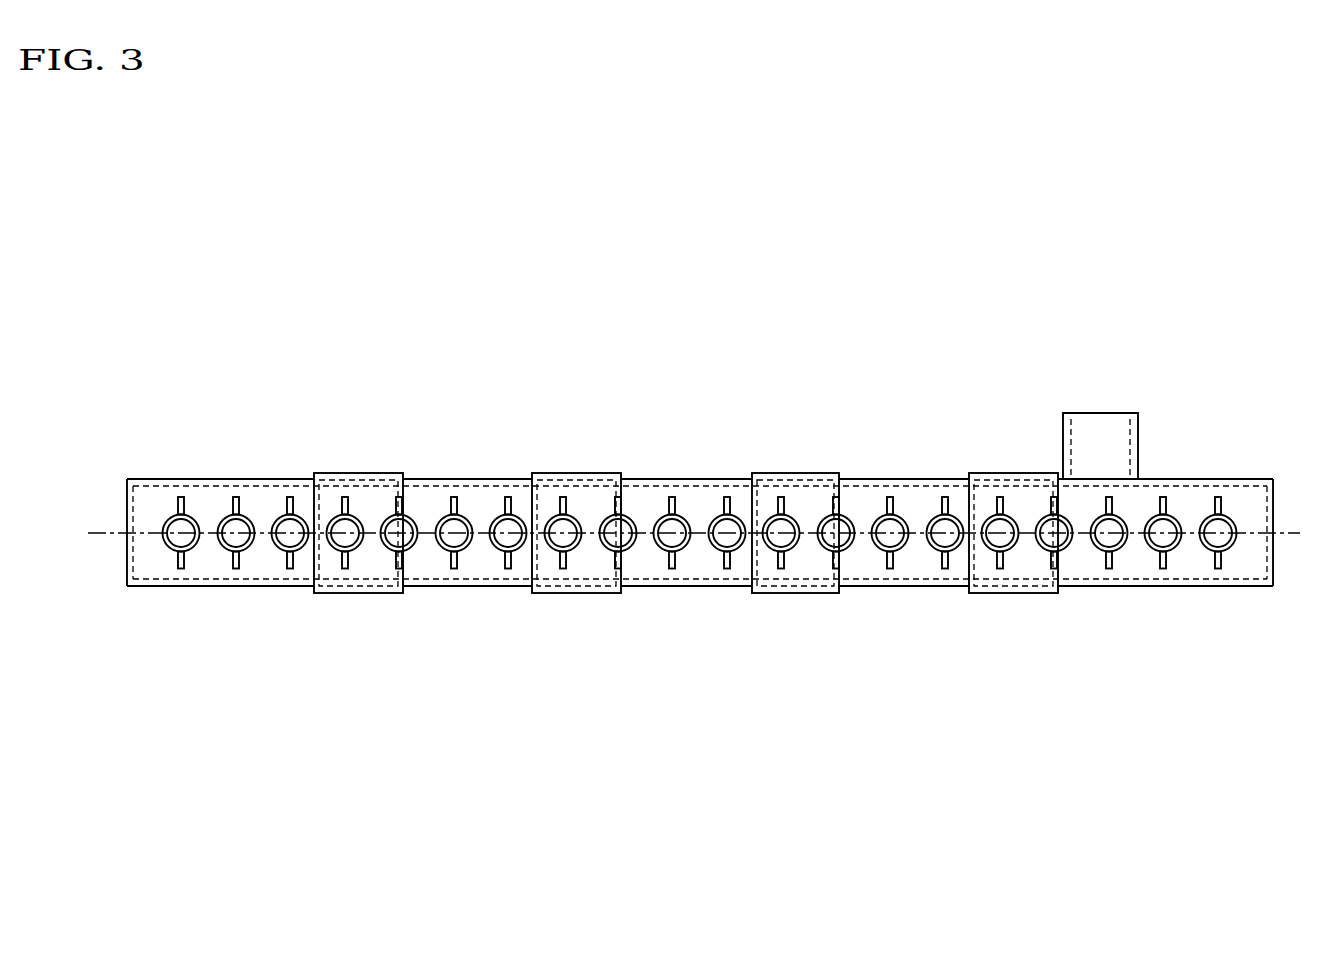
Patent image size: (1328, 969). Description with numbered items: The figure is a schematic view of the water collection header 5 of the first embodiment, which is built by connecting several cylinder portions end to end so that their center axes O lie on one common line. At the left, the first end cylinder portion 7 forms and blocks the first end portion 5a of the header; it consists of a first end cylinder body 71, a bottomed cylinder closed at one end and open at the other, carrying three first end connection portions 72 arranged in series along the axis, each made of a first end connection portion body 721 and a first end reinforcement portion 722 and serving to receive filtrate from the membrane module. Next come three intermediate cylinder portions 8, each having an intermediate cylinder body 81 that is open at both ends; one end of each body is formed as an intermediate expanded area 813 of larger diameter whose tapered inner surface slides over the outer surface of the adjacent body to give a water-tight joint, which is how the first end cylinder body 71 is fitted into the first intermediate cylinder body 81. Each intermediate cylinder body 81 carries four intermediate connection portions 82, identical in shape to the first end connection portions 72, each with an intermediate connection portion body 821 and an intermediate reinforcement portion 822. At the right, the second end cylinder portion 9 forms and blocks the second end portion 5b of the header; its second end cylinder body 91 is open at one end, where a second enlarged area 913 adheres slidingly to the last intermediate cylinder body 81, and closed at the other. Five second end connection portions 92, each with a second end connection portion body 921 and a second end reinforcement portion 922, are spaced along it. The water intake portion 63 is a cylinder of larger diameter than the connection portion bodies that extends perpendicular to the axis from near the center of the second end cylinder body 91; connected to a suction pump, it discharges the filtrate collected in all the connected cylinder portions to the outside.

The water collection header 5 is at (1183, 300).
The first end portion 5a is at (127, 532).
The second end portion 5b is at (1273, 535).
The center axis O is at (1288, 533).
The water intake portion 63 is at (1098, 428).
The first end cylinder portion 7 is at (170, 600).
The first end cylinder body 71 is at (262, 586).
The first end connection portion 72 is at (283, 517).
The first end connection portion body 721 is at (300, 518).
The first end reinforcement portion 722 is at (177, 500).
The intermediate cylinder portion 8 is at (437, 602).
The intermediate cylinder body 81 is at (510, 590).
The intermediate expanded area 813 is at (390, 593).
The intermediate connection portion 82 is at (500, 512).
The intermediate connection portion body 821 is at (960, 517).
The intermediate reinforcement portion 822 is at (344, 500).
The second end cylinder portion 9 is at (1107, 604).
The second end cylinder body 91 is at (1203, 590).
The second enlarged area 913 is at (1007, 597).
The second end connection portion 92 is at (1042, 515).
The second end connection portion body 921 is at (1172, 550).
The second end reinforcement portion 922 is at (1218, 565).